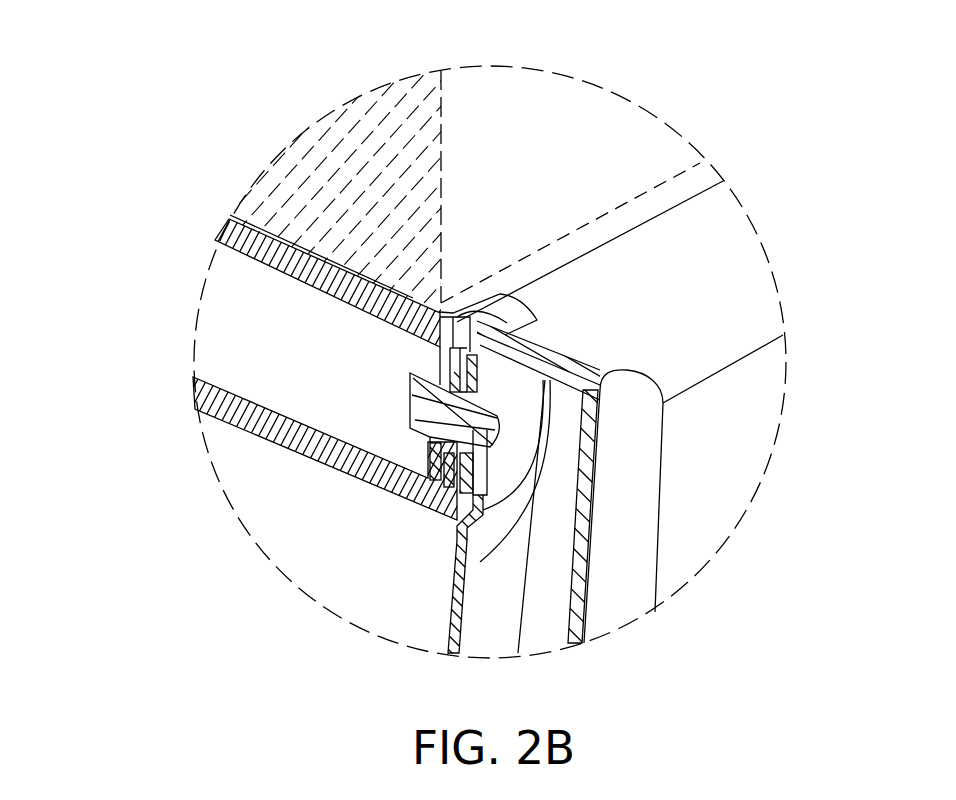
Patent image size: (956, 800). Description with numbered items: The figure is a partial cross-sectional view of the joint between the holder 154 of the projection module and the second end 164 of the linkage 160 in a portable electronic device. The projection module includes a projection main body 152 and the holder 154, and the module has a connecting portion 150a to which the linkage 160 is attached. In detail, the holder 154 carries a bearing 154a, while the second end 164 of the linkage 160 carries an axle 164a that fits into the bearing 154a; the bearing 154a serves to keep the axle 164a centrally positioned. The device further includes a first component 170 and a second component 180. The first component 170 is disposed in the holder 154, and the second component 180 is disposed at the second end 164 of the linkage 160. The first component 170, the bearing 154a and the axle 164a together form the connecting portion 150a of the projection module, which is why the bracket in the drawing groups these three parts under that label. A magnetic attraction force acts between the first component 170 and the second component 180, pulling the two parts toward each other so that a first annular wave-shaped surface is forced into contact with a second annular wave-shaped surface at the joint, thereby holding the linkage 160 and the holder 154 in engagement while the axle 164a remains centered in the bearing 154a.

The connecting portion 150a is at (78, 247).
The projection main body 152 is at (603, 163).
The holder 154 is at (707, 286).
The bearing 154a is at (438, 356).
The linkage 160 is at (630, 588).
The second end 164 is at (635, 419).
The axle 164a is at (412, 376).
The first component 170 is at (438, 357).
The second component 180 is at (482, 380).